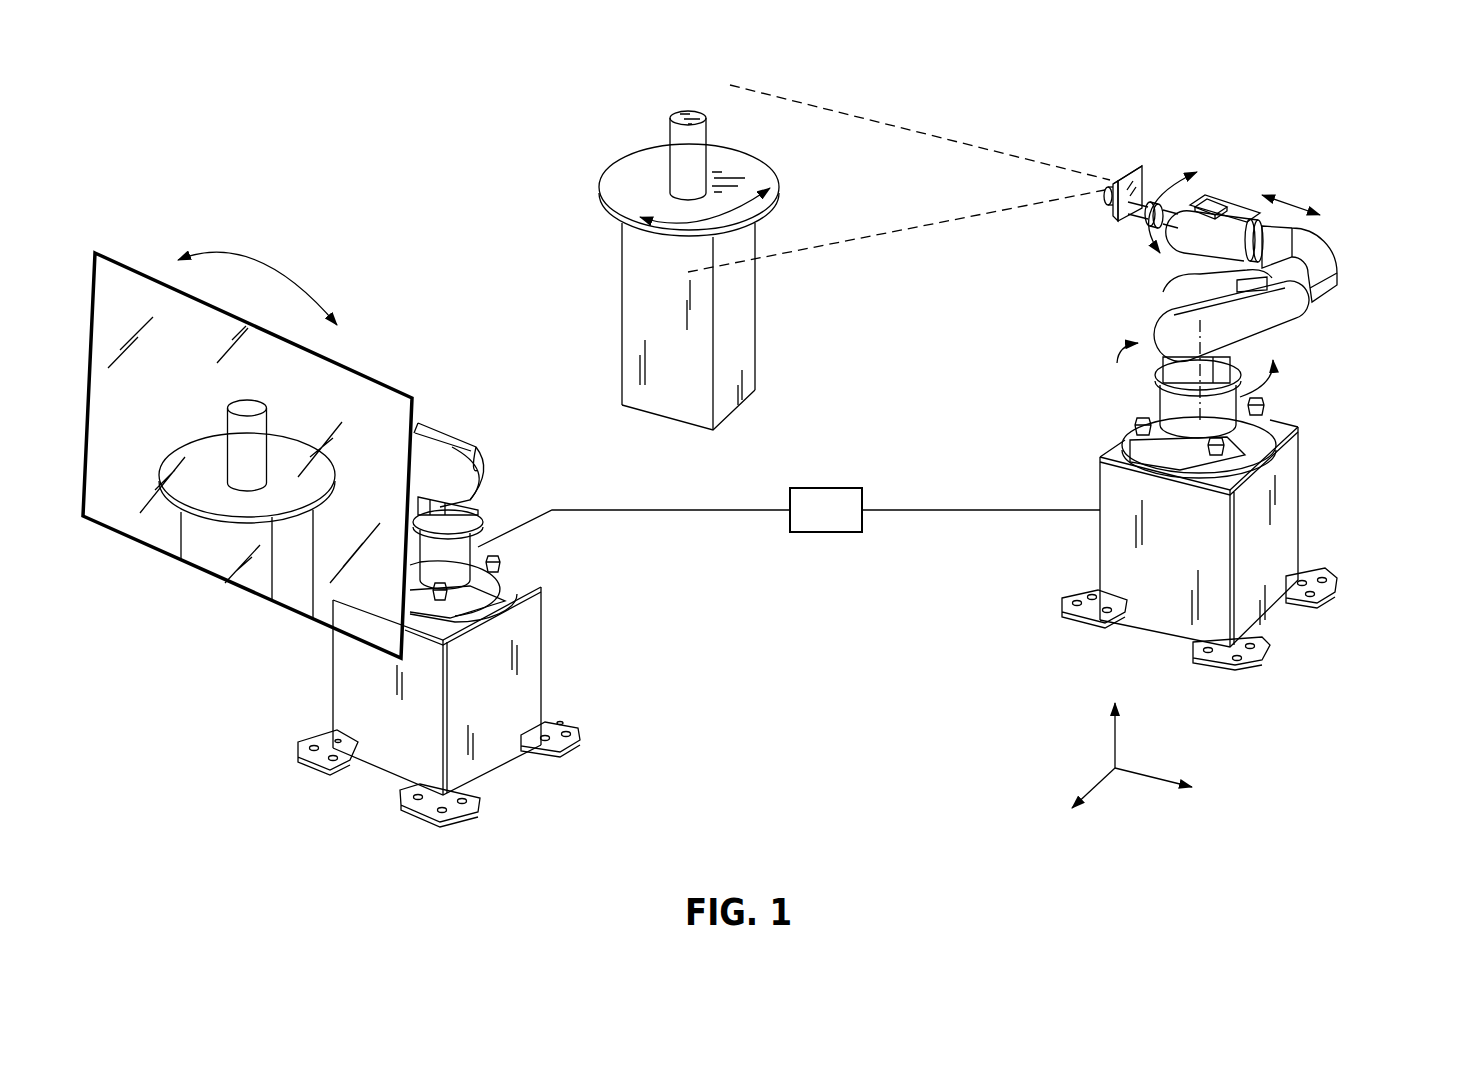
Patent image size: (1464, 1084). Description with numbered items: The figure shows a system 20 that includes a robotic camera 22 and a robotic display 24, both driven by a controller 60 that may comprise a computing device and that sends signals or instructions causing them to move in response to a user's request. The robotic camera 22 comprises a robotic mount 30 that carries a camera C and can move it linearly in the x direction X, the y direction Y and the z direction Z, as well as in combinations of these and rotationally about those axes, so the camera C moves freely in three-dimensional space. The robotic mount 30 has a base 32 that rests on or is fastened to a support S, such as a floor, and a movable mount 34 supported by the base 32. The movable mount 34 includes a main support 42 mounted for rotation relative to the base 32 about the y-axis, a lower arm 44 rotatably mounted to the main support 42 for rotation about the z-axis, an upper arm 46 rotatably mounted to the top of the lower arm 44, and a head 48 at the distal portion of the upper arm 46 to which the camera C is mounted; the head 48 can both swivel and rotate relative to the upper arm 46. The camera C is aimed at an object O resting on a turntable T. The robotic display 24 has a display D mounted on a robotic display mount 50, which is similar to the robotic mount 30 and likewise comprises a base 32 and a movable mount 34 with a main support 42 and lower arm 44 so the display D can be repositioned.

The system 20 is at (405, 130).
The robotic camera 22 is at (1385, 352).
The robotic display 24 is at (592, 615).
The robotic mount 30 is at (1165, 277).
The base 32 is at (482, 590).
The movable mount 34 is at (552, 410).
The main support 42 is at (468, 507).
The lower arm 44 is at (468, 462).
The upper arm 46 is at (1240, 198).
The head 48 is at (1168, 217).
The robotic display mount 50 is at (466, 420).
The controller 60 is at (840, 533).
The display D is at (359, 392).
The turntable T is at (590, 178).
The object O is at (672, 130).
The camera C is at (1138, 182).
The support S is at (527, 690).
The x direction X is at (1164, 785).
The y direction Y is at (1114, 718).
The z direction Z is at (1081, 797).